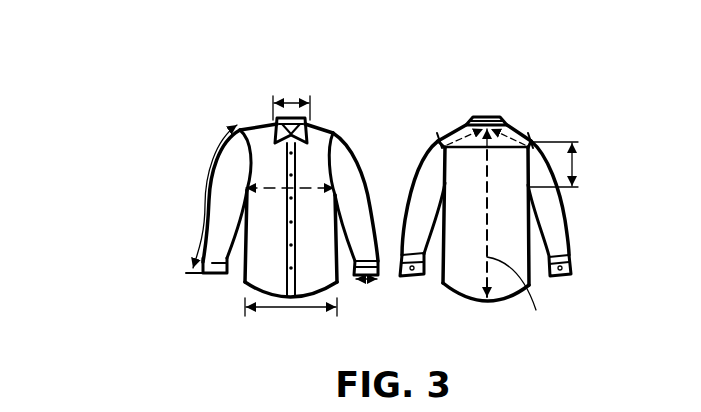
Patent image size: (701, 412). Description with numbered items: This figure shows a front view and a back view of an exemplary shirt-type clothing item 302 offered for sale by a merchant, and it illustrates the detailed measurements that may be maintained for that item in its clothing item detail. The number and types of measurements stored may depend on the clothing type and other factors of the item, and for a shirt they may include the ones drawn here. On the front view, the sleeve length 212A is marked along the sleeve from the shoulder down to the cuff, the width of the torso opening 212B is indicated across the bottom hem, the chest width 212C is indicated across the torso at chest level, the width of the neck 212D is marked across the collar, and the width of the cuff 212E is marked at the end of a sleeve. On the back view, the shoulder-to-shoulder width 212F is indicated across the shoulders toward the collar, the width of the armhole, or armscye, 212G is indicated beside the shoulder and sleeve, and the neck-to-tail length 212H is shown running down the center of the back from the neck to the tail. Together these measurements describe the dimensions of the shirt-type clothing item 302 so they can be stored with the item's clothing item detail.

The shirt-type clothing item 302 is at (168, 137).
The sleeve length 212A is at (205, 204).
The width of the torso opening 212B is at (283, 309).
The chest width 212C is at (306, 188).
The width of the neck 212D is at (303, 103).
The width of the cuff 212E is at (367, 281).
The shoulder-to-shoulder width 212F is at (512, 134).
The width of the armhole 212G is at (573, 164).
The neck-to-tail length 212H is at (521, 294).